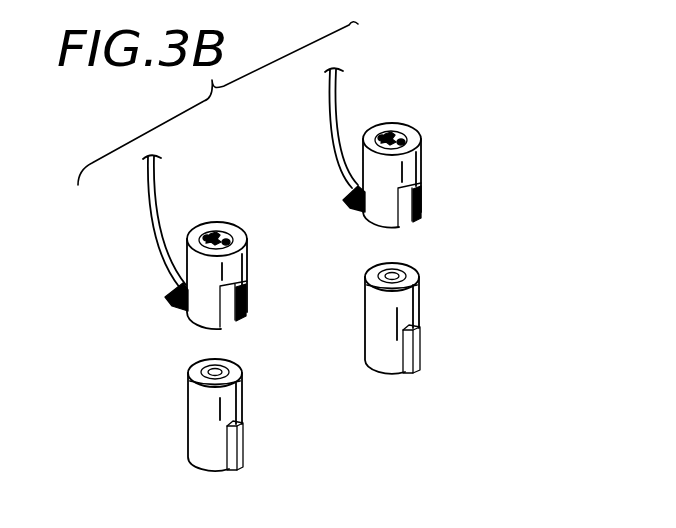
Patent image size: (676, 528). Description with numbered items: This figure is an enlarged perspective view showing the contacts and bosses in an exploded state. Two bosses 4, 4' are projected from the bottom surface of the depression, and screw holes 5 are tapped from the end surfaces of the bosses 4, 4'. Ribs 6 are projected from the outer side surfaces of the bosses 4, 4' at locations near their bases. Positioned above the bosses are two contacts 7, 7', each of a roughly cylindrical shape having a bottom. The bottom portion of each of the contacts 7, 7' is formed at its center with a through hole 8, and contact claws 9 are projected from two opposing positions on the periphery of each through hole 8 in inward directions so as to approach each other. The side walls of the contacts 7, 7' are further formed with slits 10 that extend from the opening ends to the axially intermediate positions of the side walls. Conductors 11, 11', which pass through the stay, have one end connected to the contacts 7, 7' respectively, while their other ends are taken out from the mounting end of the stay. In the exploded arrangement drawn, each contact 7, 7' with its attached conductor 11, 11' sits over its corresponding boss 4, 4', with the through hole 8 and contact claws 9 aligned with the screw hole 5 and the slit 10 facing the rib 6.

The boss 4 is at (242, 415).
The boss 4' is at (416, 318).
The screw hole 5 is at (213, 368).
The rib 6 is at (245, 441).
The contact 7 is at (232, 264).
The contact 7' is at (413, 165).
The through hole 8 is at (210, 232).
The contact claw 9 is at (220, 229).
The slit 10 is at (246, 290).
The conductor 11 is at (140, 233).
The conductor 11' is at (318, 140).